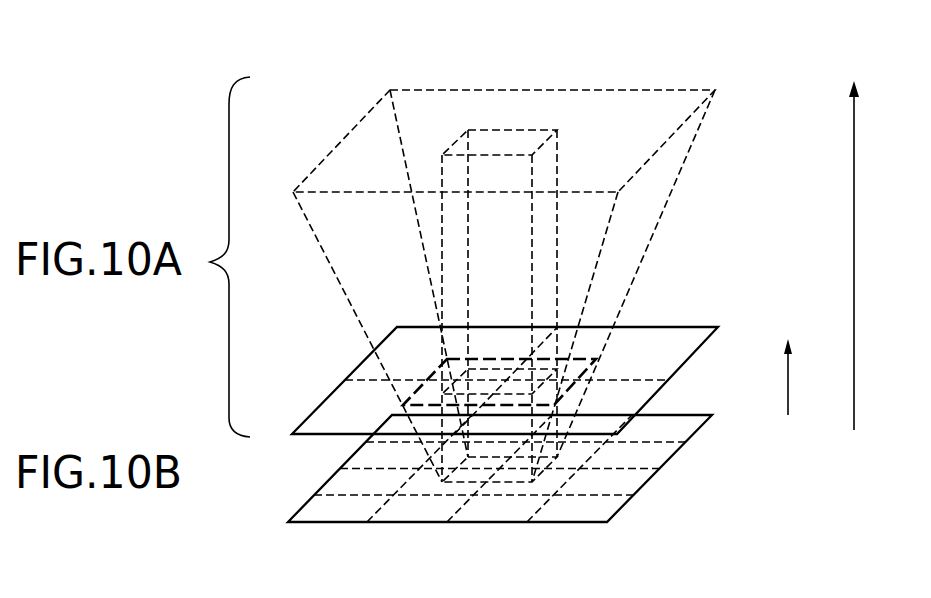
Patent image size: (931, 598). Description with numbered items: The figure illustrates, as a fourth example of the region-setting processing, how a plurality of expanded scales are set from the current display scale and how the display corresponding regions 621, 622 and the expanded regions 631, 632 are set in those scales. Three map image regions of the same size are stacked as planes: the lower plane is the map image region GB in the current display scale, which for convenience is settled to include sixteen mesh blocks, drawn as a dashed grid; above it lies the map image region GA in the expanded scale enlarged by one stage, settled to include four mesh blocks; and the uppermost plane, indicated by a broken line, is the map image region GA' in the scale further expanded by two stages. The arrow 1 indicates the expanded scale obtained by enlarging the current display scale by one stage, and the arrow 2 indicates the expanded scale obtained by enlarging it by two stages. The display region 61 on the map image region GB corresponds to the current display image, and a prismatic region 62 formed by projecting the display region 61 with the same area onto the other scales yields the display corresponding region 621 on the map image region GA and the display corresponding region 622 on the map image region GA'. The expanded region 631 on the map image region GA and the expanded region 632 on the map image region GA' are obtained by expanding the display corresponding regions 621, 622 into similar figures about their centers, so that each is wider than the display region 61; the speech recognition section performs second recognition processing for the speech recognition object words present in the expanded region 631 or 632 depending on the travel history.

In FIG. 10B, the display region 61 is at (520, 484).
In FIG. 10B, the display corresponding region 62 is at (468, 460).
In FIG. 10A, the display corresponding region 621 is at (515, 368).
In FIG. 10A, the display corresponding region 622 is at (533, 130).
In FIG. 10A, the expanded region 631 is at (428, 407).
In FIG. 10A, the expanded region 632 is at (472, 89).
In FIG. 10A, the map image region GA is at (530, 338).
In FIG. 10A, the map image region GA' is at (738, 42).
In FIG. 10B, the map image region GB is at (710, 397).
In FIG. 10B, the arrow 1 is at (799, 377).
In FIG. 10A, the arrow 2 is at (865, 255).